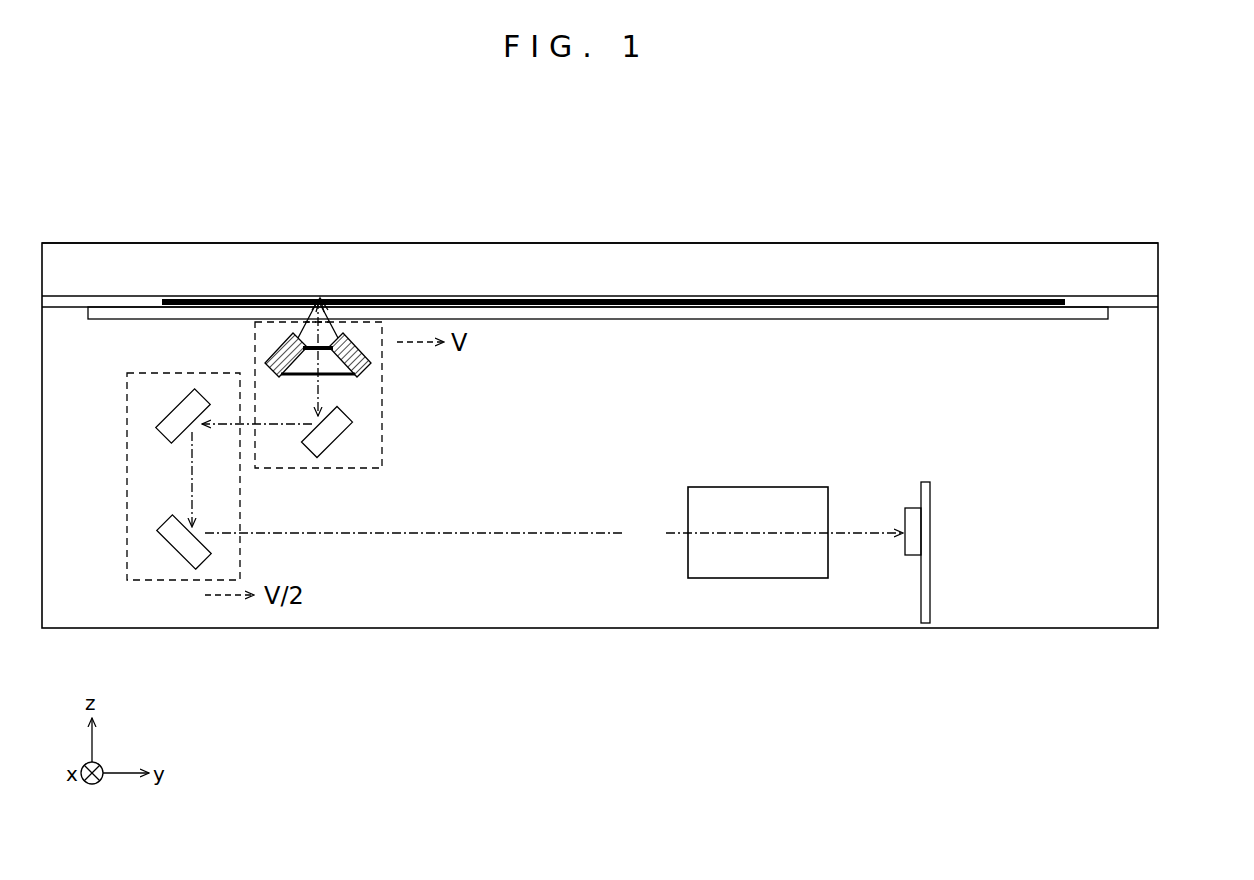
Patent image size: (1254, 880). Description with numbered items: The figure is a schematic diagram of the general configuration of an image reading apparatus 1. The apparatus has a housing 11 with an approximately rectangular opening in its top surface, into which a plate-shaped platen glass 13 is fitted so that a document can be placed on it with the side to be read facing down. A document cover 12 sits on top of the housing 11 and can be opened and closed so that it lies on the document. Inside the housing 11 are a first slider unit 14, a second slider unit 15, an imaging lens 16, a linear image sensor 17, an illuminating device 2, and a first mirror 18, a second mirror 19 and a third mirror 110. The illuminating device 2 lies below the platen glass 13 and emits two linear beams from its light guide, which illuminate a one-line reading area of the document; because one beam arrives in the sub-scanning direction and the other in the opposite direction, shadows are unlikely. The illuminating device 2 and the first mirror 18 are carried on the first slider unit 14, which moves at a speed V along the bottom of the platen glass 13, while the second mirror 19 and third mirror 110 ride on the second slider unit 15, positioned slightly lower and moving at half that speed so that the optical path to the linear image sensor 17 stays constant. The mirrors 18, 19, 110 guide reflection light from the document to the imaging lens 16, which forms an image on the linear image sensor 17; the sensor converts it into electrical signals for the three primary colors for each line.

The image reading apparatus 1 is at (44, 108).
The illuminating device 2 is at (362, 379).
The housing 11 is at (1158, 467).
The document cover 12 is at (1158, 273).
The platen glass 13 is at (1041, 320).
The first slider unit 14 is at (383, 468).
The second slider unit 15 is at (126, 394).
The imaging lens 16 is at (755, 579).
The linear image sensor 17 is at (920, 586).
The first mirror 18 is at (352, 425).
The second mirror 19 is at (156, 430).
The third mirror 110 is at (156, 533).